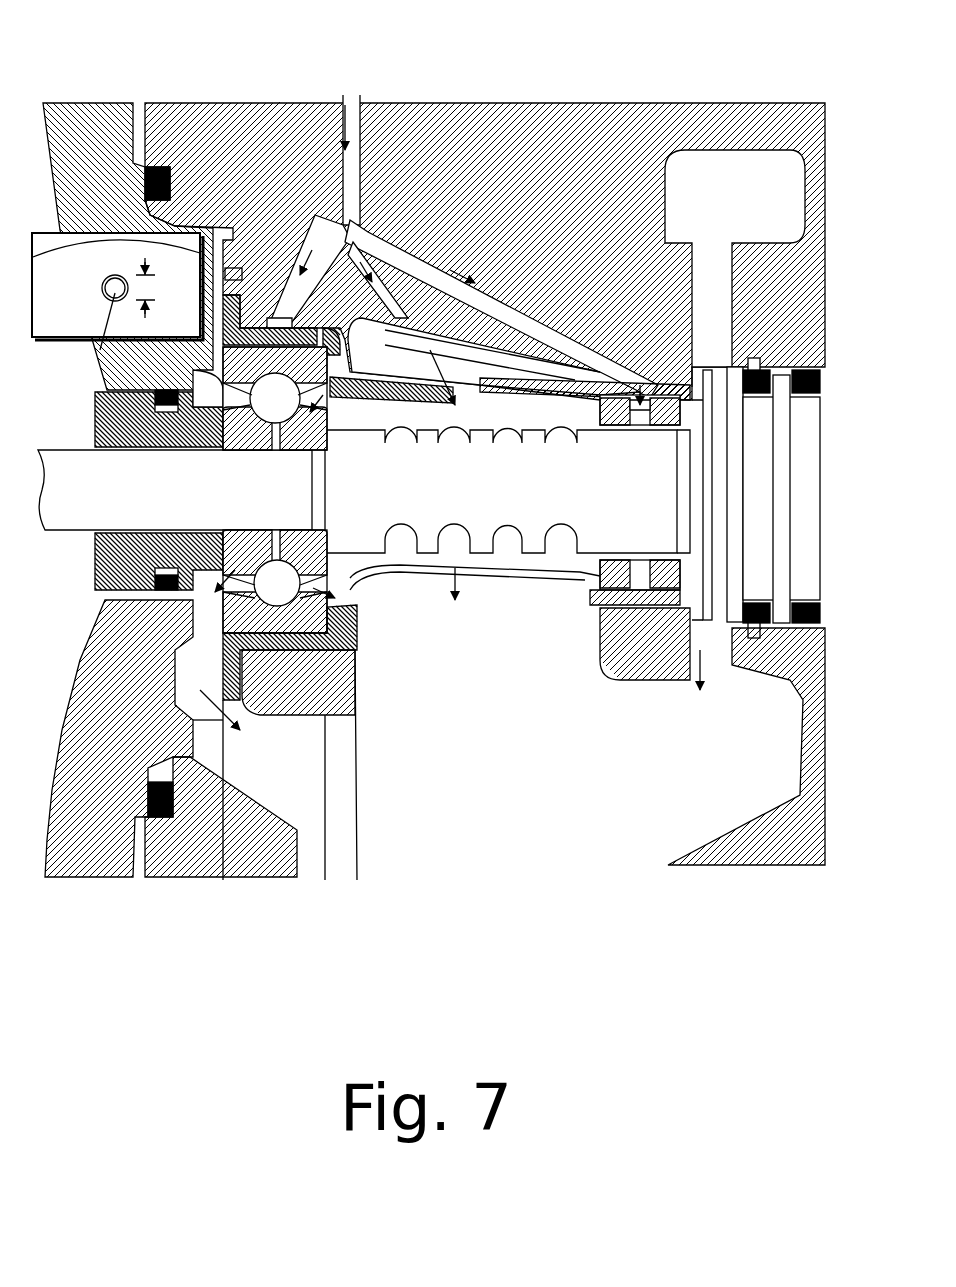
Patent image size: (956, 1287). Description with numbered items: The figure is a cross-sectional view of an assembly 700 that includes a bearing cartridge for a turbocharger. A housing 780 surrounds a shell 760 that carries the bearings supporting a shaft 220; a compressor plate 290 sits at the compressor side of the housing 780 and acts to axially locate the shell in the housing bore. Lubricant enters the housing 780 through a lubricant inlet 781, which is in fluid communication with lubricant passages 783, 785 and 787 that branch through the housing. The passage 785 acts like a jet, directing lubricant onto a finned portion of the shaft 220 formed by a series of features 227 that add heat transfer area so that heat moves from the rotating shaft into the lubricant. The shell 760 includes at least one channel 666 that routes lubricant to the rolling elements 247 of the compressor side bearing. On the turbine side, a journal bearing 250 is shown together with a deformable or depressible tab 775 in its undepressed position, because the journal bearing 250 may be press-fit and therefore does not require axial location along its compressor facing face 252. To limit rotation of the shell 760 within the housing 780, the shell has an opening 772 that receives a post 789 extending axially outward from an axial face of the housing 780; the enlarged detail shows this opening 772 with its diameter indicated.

The assembly 700 is at (130, 48).
The lubricant passage 783 is at (320, 215).
The lubricant inlet 781 is at (360, 95).
The lubricant passage 787 is at (427, 253).
The compressor plate 290 is at (128, 246).
The housing 780 is at (485, 251).
The opening 772 is at (105, 284).
The post 789 is at (100, 350).
The lubricant passage 785 is at (387, 317).
The deformable or depressible tab 775 is at (575, 386).
The channel 666 is at (328, 383).
The rolling elements 247 is at (288, 400).
The features 227 is at (505, 424).
The journal bearing 250 is at (662, 428).
The shaft 220 is at (507, 490).
The axial face 252 is at (600, 576).
The shell 760 is at (357, 617).